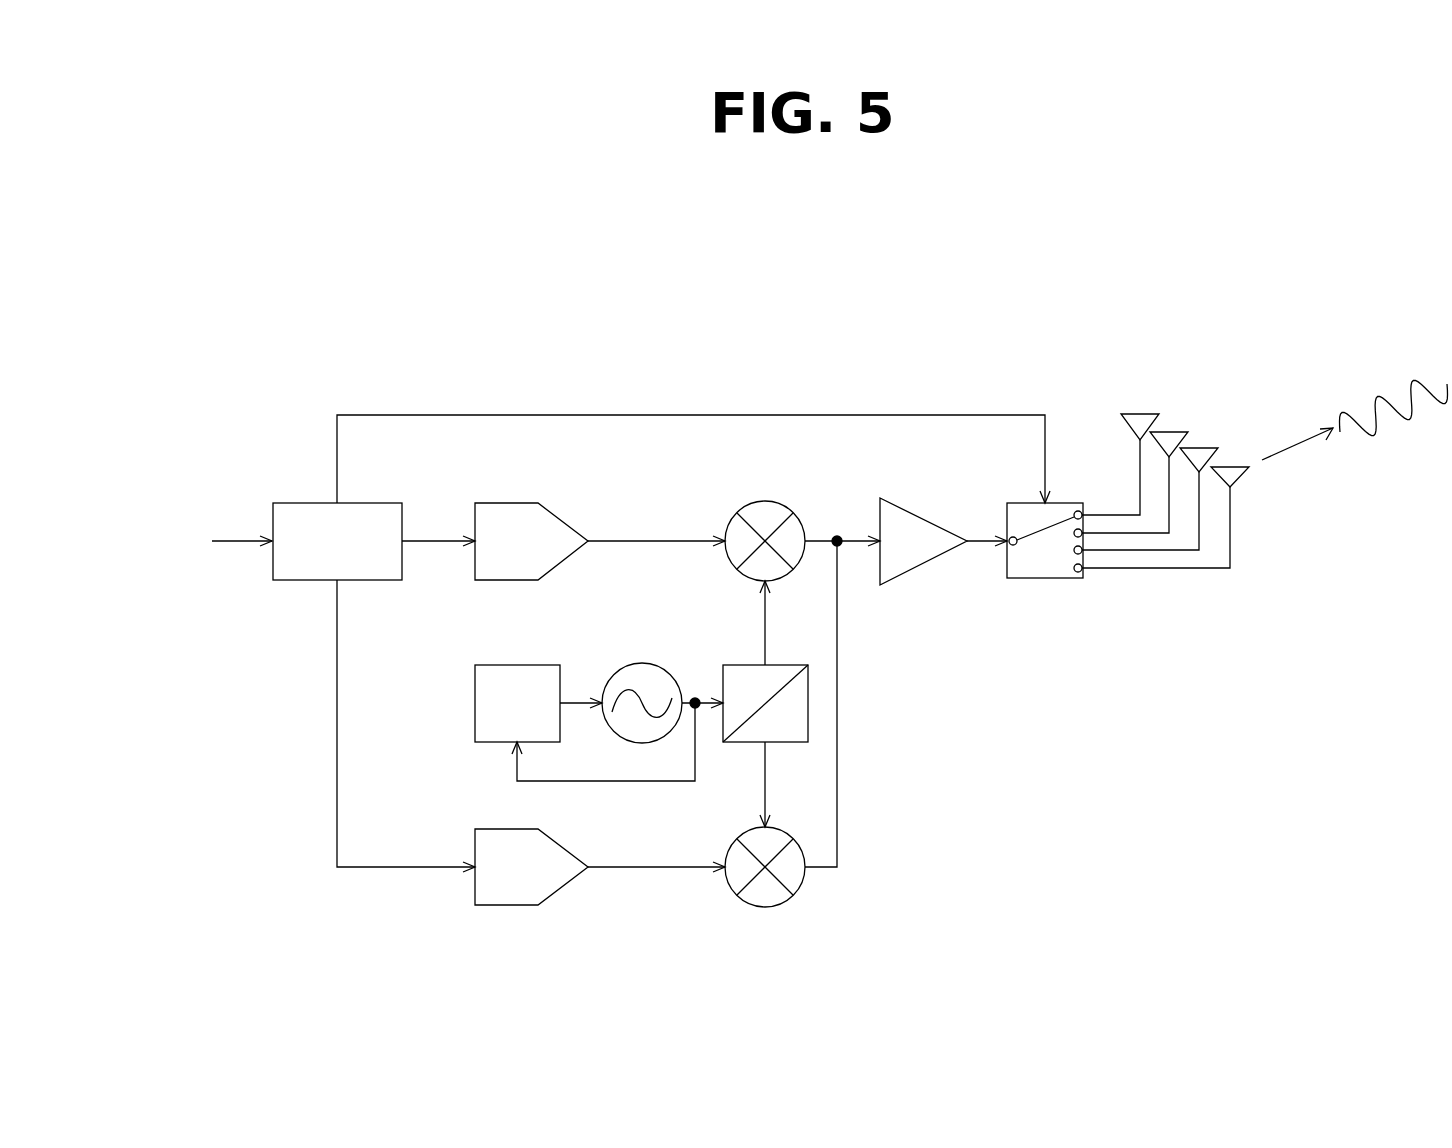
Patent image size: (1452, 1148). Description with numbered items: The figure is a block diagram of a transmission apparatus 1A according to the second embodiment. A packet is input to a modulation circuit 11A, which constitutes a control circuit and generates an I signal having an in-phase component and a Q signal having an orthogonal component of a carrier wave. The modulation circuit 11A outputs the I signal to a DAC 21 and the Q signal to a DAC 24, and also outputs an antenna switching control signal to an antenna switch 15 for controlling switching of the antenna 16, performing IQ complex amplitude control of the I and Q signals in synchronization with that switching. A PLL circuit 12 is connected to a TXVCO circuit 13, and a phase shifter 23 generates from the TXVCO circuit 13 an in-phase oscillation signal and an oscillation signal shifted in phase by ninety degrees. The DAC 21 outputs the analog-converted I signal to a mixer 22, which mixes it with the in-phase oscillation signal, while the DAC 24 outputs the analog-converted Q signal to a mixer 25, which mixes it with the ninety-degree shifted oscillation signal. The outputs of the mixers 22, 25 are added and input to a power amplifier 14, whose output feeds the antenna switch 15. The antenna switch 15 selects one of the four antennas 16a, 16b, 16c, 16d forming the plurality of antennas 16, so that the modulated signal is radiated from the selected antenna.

The transmission apparatus 1A is at (1092, 272).
The modulation circuit 11A is at (370, 503).
The PLL circuit 12 is at (517, 665).
The TXVCO circuit 13 is at (641, 663).
The power amplifier 14 is at (924, 519).
The antenna switch 15 is at (1070, 503).
The antennas 16 is at (1142, 291).
The antenna 16a is at (1143, 414).
The antenna 16b is at (1171, 432).
The antenna 16c is at (1201, 448).
The antenna 16d is at (1232, 467).
The DAC 21 is at (508, 503).
The mixer 22 is at (766, 501).
The phase shifter 23 is at (795, 665).
The DAC 24 is at (493, 829).
The mixer 25 is at (795, 827).